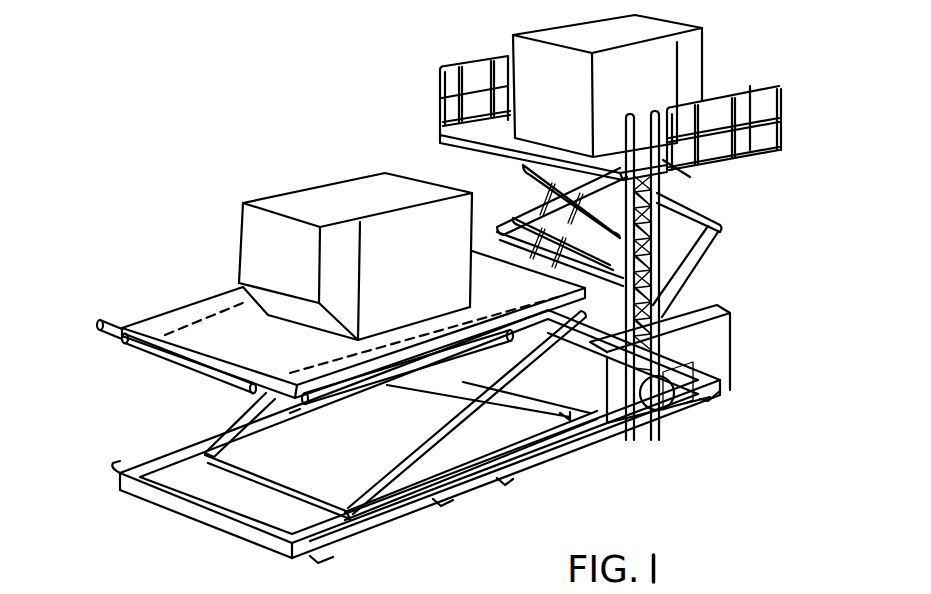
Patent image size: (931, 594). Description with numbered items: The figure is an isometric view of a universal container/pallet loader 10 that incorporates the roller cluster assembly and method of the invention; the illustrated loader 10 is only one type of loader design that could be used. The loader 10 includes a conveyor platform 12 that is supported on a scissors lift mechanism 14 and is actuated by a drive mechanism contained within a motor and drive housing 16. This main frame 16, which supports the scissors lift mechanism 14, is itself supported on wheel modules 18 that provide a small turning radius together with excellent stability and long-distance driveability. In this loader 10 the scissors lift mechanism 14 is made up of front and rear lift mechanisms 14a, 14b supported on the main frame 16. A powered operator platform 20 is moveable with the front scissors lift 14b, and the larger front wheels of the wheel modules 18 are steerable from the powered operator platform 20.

The universal container/pallet loader 10 is at (335, 126).
The conveyor platform 12 is at (176, 318).
The scissors lift mechanism 14 is at (517, 432).
The rear lift mechanism 14a is at (263, 482).
The front scissors lift 14b is at (722, 240).
The main frame 16 is at (468, 492).
The wheel modules 18 is at (677, 407).
The powered operator platform 20 is at (777, 133).